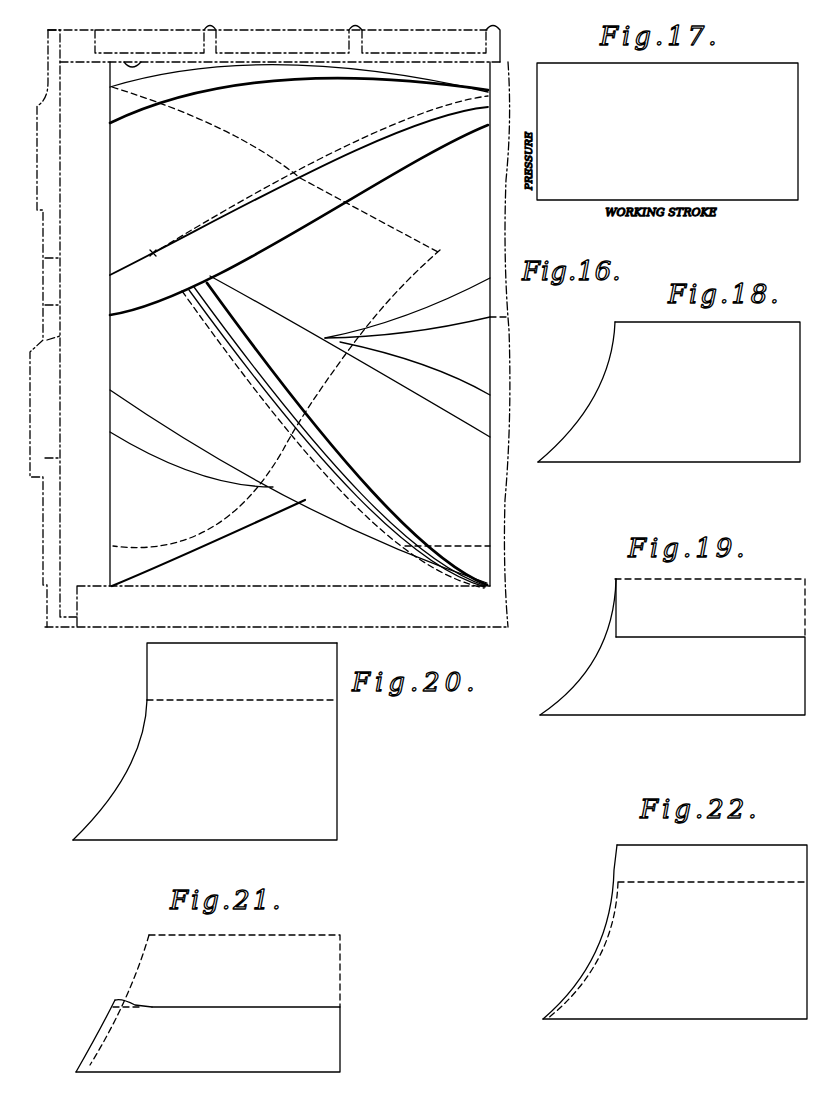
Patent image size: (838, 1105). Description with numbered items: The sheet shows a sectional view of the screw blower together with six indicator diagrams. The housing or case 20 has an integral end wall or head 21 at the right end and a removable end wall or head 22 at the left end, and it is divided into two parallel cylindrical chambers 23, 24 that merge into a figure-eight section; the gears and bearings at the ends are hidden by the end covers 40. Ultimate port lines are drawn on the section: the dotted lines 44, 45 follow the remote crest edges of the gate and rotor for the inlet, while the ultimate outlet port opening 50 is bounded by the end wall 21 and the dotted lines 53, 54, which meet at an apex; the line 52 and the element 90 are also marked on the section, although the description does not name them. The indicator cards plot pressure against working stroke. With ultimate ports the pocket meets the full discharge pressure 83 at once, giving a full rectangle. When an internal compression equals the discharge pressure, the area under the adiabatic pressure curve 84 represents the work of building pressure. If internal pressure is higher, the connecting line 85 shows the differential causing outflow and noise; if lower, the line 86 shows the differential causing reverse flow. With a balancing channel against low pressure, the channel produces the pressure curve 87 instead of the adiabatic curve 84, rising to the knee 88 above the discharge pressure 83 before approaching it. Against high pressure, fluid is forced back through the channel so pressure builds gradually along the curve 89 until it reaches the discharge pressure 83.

In FIG. 16, the housing or case 20 is at (278, 50).
In FIG. 16, the integral end wall or head 21 is at (434, 323).
In FIG. 16, the removable end wall or head 22 is at (57, 82).
In FIG. 16, the cylindrical chamber 23 is at (300, 324).
In FIG. 16, the cylindrical chamber 24 is at (308, 569).
In FIG. 16, the end cover 40 is at (50, 293).
In FIG. 16, the dotted line (ultimate inlet port line) 44 is at (270, 158).
In FIG. 16, the dotted line (ultimate inlet port line) 45 is at (330, 378).
In FIG. 16, the ultimate outlet port opening 50 is at (338, 462).
In FIG. 16, the cam slot portion 52 is at (437, 545).
In FIG. 16, the dotted line (ultimate outlet port line) 53 is at (250, 363).
In FIG. 16, the dotted line (ultimate outlet port line) 54 is at (348, 138).
In FIG. 16, the pin 90 is at (142, 60).
In FIG. 17, the full discharge pressure 83 is at (706, 64).
In FIG. 18, the full discharge pressure 83 is at (703, 323).
In FIG. 19, the full discharge pressure 83 is at (700, 638).
In FIG. 20, the full discharge pressure 83 is at (220, 645).
In FIG. 21, the full discharge pressure 83 is at (225, 1008).
In FIG. 22, the full discharge pressure 83 is at (708, 846).
In FIG. 18, the adiabatic pressure curve 84 is at (597, 383).
In FIG. 19, the adiabatic pressure curve 84 is at (597, 646).
In FIG. 20, the adiabatic pressure curve 84 is at (128, 763).
In FIG. 21, the adiabatic pressure curve 84 is at (113, 1028).
In FIG. 22, the adiabatic pressure curve 84 is at (600, 941).
In FIG. 19, the connecting line 85 is at (618, 608).
In FIG. 20, the line (pressure differential) 86 is at (147, 664).
In FIG. 21, the pressure curve 87 is at (143, 1003).
In FIG. 21, the point or knee 88 is at (114, 999).
In FIG. 22, the curve (pressure build-up) 89 is at (611, 891).